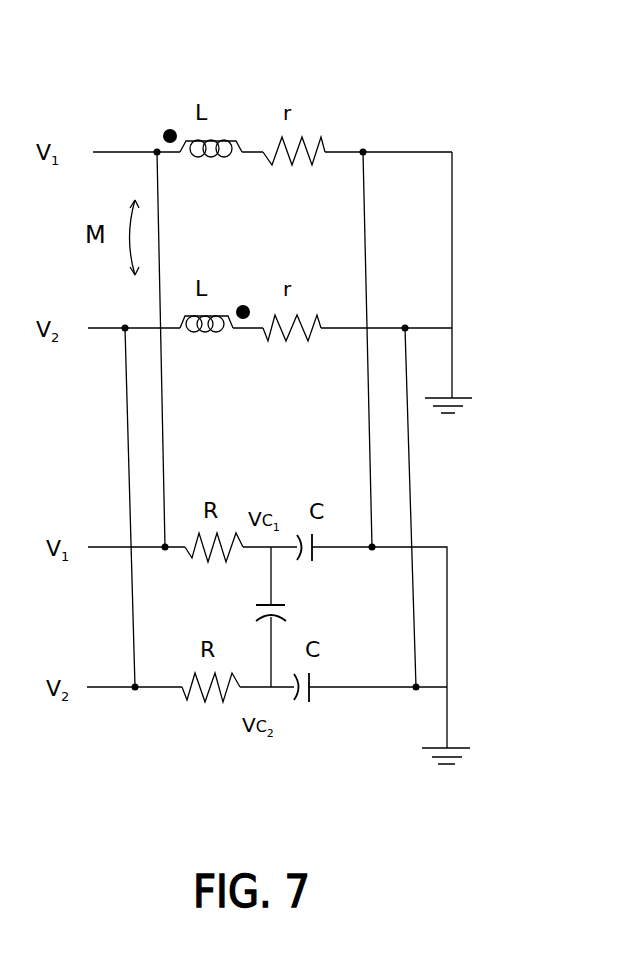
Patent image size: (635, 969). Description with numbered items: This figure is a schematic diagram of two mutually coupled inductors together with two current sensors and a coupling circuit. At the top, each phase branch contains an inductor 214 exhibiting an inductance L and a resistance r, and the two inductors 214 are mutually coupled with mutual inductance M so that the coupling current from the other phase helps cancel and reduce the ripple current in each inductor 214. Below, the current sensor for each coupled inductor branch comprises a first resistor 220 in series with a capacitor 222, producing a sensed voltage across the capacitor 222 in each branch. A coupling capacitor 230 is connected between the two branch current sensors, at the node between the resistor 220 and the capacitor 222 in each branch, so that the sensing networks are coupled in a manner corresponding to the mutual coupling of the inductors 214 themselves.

The inductor 214 is at (213, 135).
The first resistor 220 is at (203, 555).
The capacitor 222 is at (316, 558).
The coupling capacitor 230 is at (359, 619).